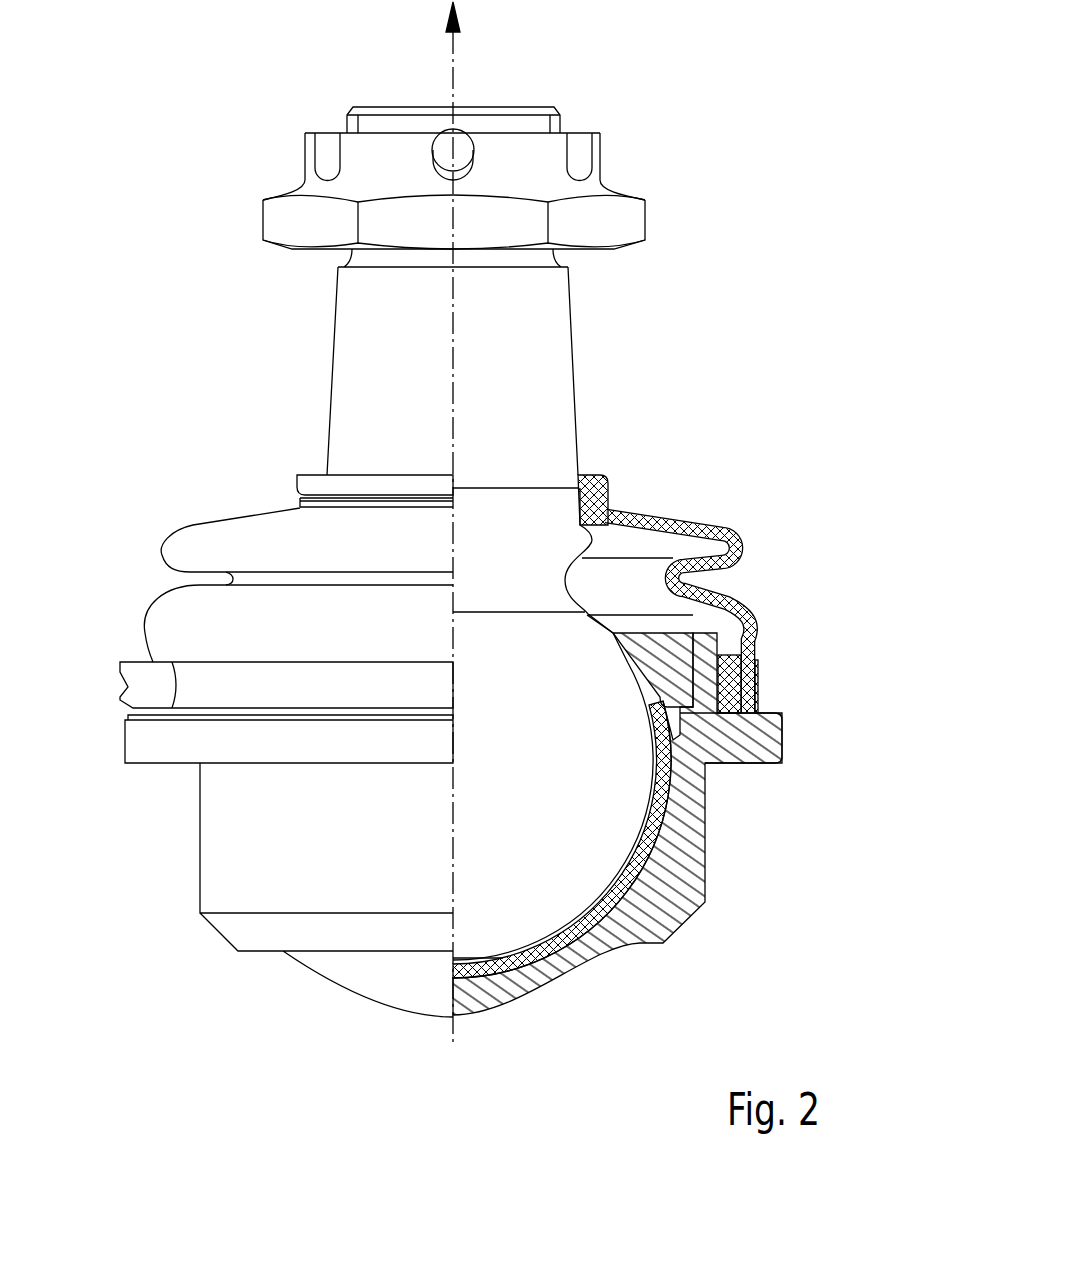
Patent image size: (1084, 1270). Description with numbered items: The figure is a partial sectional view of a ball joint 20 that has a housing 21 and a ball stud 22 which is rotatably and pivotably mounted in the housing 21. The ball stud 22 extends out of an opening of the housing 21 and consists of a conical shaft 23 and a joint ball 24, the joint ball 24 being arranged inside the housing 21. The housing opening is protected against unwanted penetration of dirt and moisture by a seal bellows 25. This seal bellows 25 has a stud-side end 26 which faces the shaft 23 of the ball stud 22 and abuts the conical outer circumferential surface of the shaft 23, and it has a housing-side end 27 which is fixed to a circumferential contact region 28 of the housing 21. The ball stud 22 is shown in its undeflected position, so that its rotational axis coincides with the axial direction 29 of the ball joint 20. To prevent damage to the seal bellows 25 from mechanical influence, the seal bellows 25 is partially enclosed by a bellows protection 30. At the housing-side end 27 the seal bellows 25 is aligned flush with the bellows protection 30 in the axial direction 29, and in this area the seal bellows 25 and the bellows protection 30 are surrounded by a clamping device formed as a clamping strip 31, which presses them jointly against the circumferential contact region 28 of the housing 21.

The ball joint 20 is at (682, 260).
The housing 21 is at (472, 825).
The ball stud 22 is at (590, 358).
The conical shaft 23 is at (555, 410).
The joint ball 24 is at (540, 910).
The seal bellows 25 is at (495, 582).
The stud-side end 26 is at (625, 482).
The housing-side end 27 is at (498, 680).
The circumferential contact region 28 is at (712, 780).
The axial direction 29 is at (458, 55).
The bellows protection 30 is at (752, 602).
The clamping strip 31 is at (757, 675).